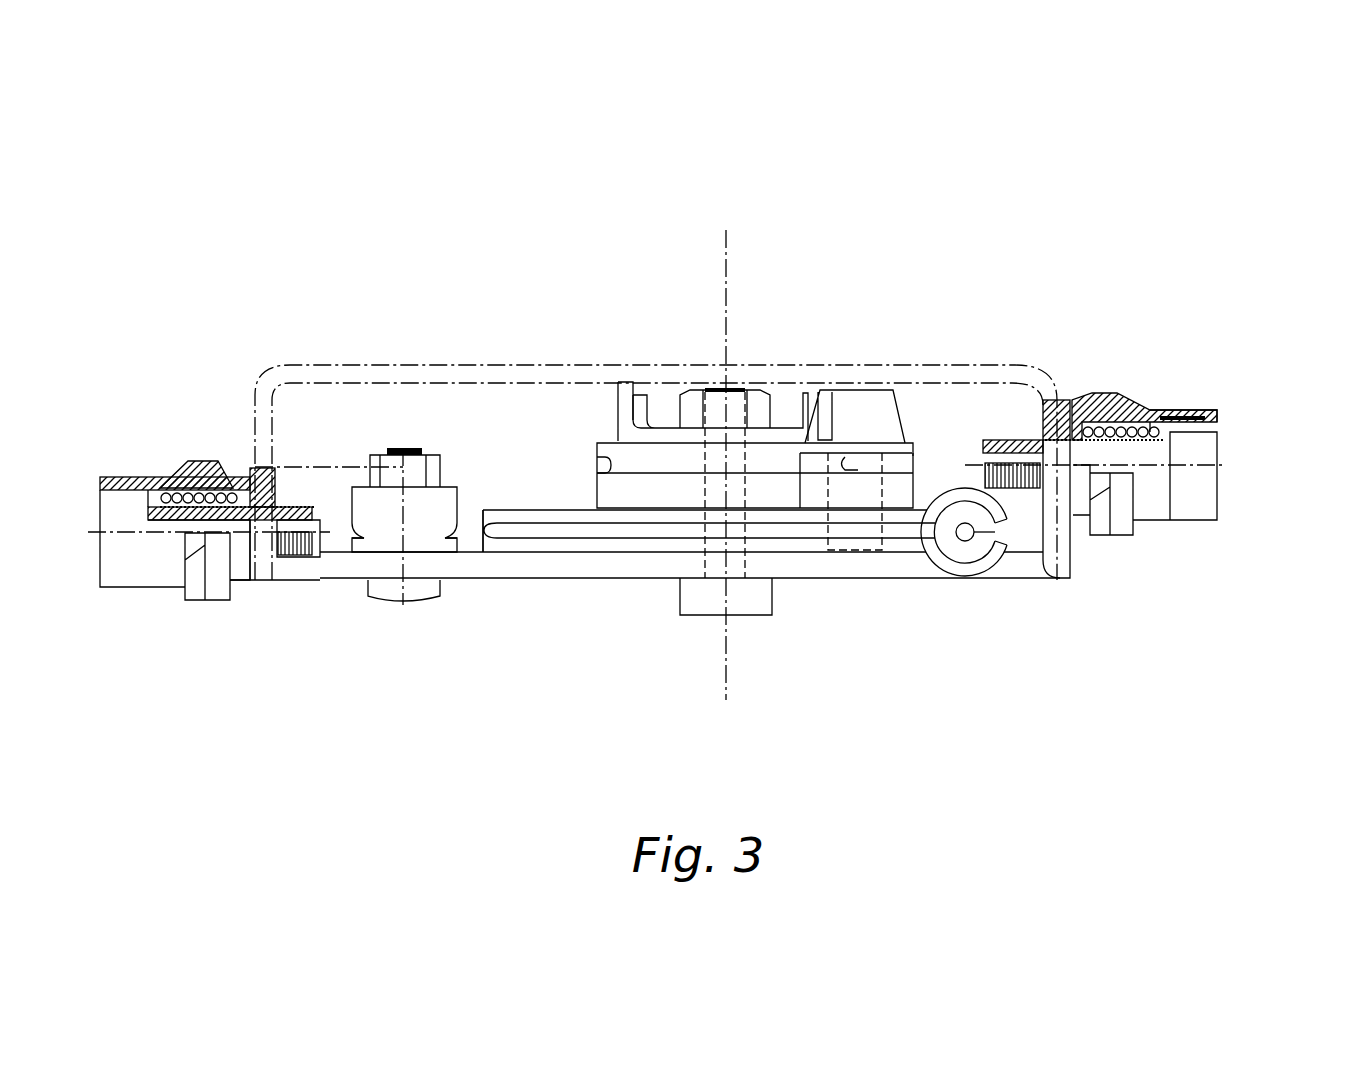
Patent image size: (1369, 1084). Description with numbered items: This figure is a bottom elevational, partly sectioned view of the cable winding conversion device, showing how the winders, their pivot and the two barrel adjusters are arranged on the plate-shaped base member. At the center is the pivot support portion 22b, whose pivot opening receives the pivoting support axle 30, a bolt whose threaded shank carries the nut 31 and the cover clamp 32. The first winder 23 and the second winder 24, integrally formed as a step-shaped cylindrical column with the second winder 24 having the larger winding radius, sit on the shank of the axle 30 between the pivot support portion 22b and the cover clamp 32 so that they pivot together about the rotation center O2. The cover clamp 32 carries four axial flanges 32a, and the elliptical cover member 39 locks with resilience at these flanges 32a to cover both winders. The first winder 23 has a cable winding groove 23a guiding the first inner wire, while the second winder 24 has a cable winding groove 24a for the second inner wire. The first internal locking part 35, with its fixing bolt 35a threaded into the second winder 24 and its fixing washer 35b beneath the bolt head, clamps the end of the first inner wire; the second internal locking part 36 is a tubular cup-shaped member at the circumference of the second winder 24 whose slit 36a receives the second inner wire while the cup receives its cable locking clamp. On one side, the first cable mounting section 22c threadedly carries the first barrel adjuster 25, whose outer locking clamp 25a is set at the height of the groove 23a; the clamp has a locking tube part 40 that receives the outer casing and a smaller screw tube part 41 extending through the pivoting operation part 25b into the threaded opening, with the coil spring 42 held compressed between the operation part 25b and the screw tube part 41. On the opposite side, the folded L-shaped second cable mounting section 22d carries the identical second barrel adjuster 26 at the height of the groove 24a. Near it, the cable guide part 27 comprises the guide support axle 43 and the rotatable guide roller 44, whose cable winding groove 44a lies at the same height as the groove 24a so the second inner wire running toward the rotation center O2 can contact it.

The rotation center O2 is at (727, 310).
The pivot support portion 22b is at (622, 570).
The first cable mounting section 22c is at (1063, 550).
The second cable mounting section 22d is at (250, 462).
The first winder 23 is at (590, 476).
The cable winding groove 23a is at (600, 460).
The second winder 24 is at (483, 505).
The cable winding groove 24a is at (473, 543).
The first barrel adjuster 25 is at (1148, 398).
The outer locking clamp 25a is at (1217, 422).
The pivoting operation part 25b is at (1100, 395).
The second barrel adjuster 26 is at (128, 468).
The cable guide part 27 is at (437, 446).
The pivoting support axle 30 is at (742, 605).
The nut 31 is at (763, 400).
The cover clamp 32 is at (640, 380).
The axial flange 32a is at (645, 405).
The first internal locking part 35 is at (884, 385).
The fixing bolt 35a is at (853, 403).
The fixing washer 35b is at (900, 463).
The second internal locking part 36 is at (957, 572).
The slit 36a is at (1000, 535).
The cover member 39 is at (1008, 363).
The locking tube part 40 is at (1183, 432).
The screw tube part 41 is at (1157, 433).
The coil spring 42 is at (1153, 417).
The guide support axle 43 is at (395, 593).
The guide roller 44 is at (367, 512).
The cable winding groove 44a is at (467, 545).